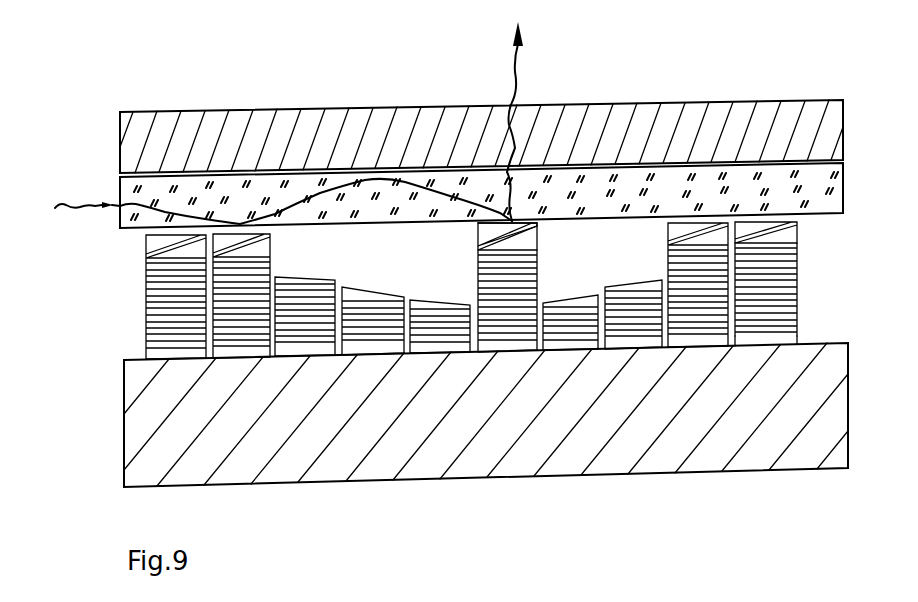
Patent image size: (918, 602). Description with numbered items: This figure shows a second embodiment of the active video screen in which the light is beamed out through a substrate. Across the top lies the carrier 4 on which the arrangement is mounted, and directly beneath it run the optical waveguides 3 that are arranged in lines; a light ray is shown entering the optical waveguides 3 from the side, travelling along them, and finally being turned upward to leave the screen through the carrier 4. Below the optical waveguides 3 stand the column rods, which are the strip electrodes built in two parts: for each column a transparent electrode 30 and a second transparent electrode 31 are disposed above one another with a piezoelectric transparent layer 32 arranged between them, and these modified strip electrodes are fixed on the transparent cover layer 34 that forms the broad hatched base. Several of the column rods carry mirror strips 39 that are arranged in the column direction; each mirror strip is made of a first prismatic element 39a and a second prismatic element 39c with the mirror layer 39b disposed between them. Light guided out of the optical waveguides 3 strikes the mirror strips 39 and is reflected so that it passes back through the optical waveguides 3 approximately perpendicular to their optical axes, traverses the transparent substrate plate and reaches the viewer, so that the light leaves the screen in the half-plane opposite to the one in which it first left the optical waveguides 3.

The carrier 4 is at (742, 118).
The optical waveguides 3 is at (788, 190).
The mirror strips 39 is at (258, 249).
The first prismatic element 39a is at (510, 287).
The mirror layer 39b is at (483, 247).
The second prismatic element 39c is at (490, 232).
The transparent electrode 30 is at (785, 252).
The piezoelectric transparent layer 32 is at (783, 278).
The transparent electrode 31 is at (785, 342).
The transparent cover layer 34 is at (770, 420).